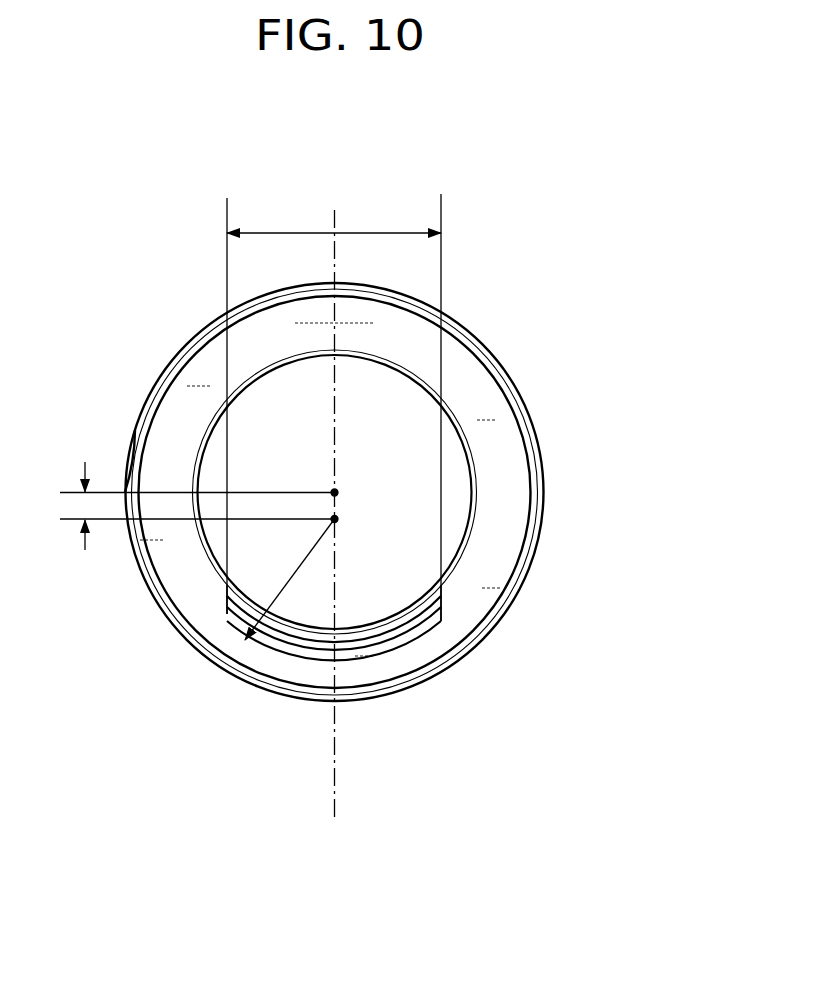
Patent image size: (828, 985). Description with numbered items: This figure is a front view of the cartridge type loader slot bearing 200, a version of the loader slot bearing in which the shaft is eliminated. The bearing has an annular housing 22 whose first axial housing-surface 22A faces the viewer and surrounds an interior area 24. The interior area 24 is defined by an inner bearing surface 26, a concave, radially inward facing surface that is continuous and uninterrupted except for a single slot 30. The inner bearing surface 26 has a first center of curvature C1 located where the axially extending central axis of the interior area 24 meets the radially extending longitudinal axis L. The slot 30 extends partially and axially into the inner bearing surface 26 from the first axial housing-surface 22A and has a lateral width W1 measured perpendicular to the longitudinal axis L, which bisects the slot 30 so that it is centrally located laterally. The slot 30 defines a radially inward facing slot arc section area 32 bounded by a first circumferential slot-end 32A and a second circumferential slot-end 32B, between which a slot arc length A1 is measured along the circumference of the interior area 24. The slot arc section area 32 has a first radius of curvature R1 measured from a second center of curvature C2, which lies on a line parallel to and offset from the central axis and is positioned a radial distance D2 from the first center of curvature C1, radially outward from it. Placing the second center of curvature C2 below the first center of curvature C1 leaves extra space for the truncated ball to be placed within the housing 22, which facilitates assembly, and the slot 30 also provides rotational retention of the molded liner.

The loader slot bearing 200 is at (565, 302).
The annular housing 22 is at (147, 395).
The first axial housing-surface 22A is at (165, 442).
The interior area 24 is at (452, 493).
The inner bearing surface 26 is at (466, 447).
The slot 30 is at (357, 652).
The slot arc section area 32 is at (286, 632).
The first circumferential slot-end 32A is at (223, 597).
The second circumferential slot-end 32B is at (441, 597).
The lateral width W1 is at (288, 232).
The radial distance D2 is at (85, 552).
The first center of curvature C1 is at (338, 491).
The second center of curvature C2 is at (340, 519).
The first radius of curvature R1 is at (274, 596).
The slot arc length A1 is at (383, 622).
The longitudinal axis L is at (340, 800).